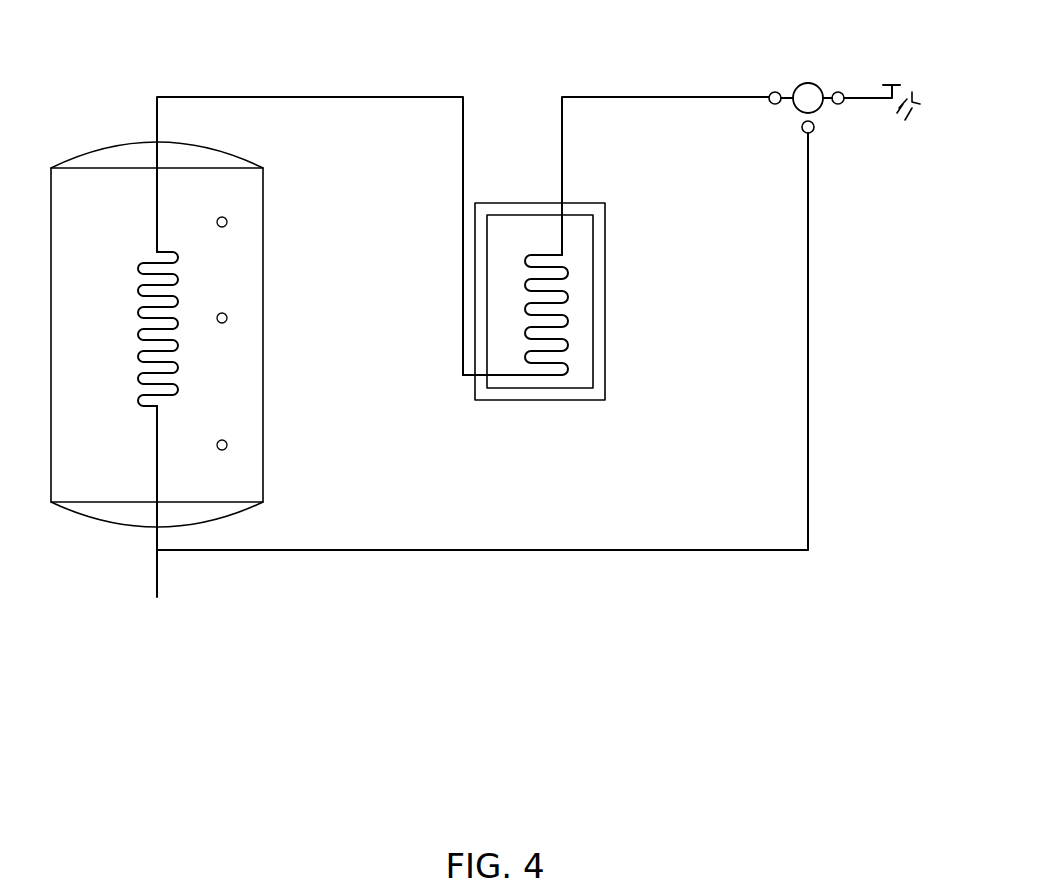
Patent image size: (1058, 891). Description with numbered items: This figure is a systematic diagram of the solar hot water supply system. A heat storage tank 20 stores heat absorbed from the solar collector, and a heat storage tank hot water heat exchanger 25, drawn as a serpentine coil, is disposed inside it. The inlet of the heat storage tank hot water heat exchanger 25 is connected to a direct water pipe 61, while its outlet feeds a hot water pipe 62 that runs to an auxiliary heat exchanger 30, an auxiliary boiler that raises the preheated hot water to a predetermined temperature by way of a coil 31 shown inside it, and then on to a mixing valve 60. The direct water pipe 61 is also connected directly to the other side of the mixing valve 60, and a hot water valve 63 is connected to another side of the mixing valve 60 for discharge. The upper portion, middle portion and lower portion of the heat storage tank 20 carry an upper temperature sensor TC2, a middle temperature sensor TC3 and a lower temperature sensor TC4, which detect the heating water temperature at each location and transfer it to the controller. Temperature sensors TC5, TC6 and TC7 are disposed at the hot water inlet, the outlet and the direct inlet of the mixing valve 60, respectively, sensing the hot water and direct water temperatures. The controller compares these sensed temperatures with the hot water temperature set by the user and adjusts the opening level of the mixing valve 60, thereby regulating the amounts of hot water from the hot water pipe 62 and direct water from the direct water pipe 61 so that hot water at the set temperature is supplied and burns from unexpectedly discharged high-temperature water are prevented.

The heat storage tank 20 is at (123, 515).
The heat storage tank hot water heat exchanger 25 is at (180, 350).
The auxiliary heat exchanger 30 is at (605, 293).
The heat exchanger coil of heat source unit 31 is at (568, 340).
The mixing valve 60 is at (808, 83).
The direct water pipe 61 is at (157, 575).
The hot water pipe 62 is at (323, 95).
The hot water valve 63 is at (912, 93).
The upper temperature sensor TC2 is at (221, 426).
The middle temperature sensor TC3 is at (221, 299).
The lower temperature sensor TC4 is at (221, 203).
The temperature sensor TC5 is at (762, 79).
The temperature sensor TC6 is at (836, 135).
The temperature sensor TC7 is at (852, 79).